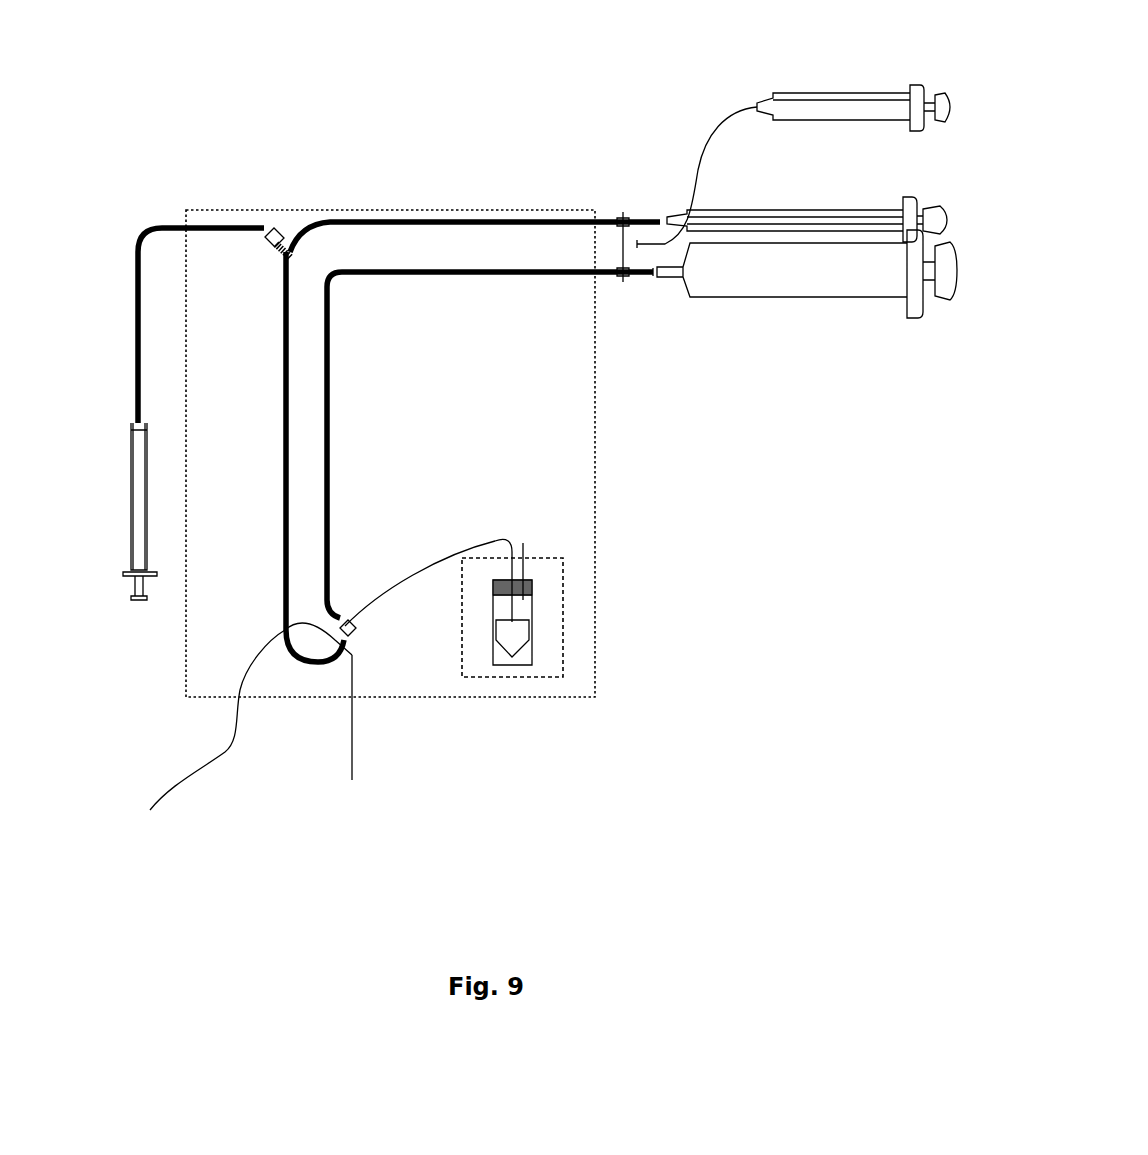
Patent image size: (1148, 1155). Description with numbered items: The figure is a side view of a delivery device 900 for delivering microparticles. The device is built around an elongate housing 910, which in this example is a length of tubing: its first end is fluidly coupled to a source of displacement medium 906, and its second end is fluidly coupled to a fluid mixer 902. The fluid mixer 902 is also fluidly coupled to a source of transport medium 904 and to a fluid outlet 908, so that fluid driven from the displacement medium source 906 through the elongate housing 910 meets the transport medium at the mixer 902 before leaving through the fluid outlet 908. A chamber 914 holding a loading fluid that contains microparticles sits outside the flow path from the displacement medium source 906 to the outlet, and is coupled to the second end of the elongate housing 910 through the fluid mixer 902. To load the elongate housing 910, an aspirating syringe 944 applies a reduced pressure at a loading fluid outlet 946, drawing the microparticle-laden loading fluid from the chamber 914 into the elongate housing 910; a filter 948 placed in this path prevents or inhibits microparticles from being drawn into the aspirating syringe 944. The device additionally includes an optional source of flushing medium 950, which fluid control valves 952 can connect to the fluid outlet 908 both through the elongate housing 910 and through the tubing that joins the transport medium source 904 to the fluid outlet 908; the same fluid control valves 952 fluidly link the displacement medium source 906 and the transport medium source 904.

The delivery device 900 is at (328, 210).
The fluid mixer 902 is at (352, 778).
The source of transport medium 904 is at (795, 272).
The source of displacement medium 906 is at (790, 217).
The fluid outlet 908 is at (192, 788).
The elongate housing 910 is at (282, 542).
The chamber 914 is at (567, 617).
The aspirating syringe 944 is at (137, 520).
The loading fluid outlet 946 is at (125, 260).
The filter 948 is at (272, 225).
The source of flushing medium 950 is at (862, 110).
The fluid control valves 952 is at (622, 207).